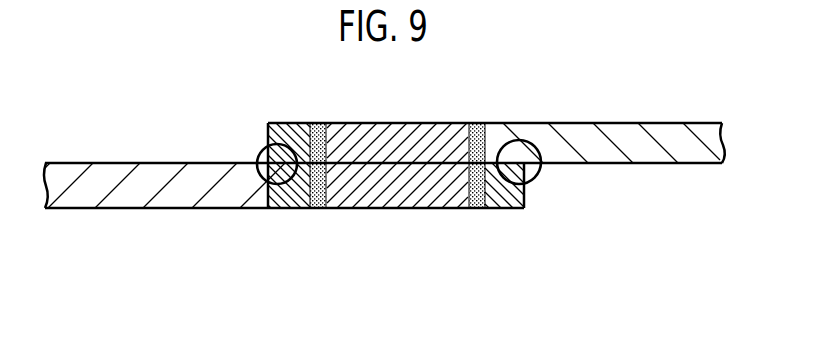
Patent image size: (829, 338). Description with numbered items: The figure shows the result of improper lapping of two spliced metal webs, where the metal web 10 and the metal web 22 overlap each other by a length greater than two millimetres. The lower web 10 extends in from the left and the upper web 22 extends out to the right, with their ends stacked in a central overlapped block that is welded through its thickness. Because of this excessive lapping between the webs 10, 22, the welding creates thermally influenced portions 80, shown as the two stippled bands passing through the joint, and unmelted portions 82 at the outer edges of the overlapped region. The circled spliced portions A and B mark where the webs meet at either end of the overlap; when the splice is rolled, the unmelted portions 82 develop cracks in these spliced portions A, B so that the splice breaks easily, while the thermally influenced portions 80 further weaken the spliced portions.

The metal web 10 is at (148, 172).
The metal web 22 is at (628, 128).
The thermally influenced portion 80 is at (322, 200).
The unmelted portion 82 is at (295, 123).
The spliced portion A is at (259, 147).
The spliced portion B is at (535, 177).